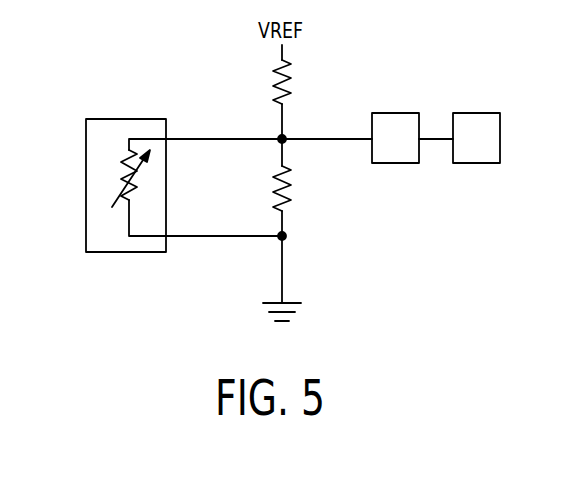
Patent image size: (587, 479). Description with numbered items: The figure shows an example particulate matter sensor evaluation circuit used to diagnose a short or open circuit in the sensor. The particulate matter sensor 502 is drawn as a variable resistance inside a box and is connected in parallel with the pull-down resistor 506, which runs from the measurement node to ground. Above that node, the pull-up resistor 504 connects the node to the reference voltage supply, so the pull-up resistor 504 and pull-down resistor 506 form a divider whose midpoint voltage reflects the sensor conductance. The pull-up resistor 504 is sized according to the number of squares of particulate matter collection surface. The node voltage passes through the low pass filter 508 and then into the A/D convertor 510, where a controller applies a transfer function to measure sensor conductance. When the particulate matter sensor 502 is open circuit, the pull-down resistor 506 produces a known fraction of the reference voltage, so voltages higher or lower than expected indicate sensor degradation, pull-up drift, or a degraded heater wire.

The particulate matter sensor 502 is at (97, 237).
The pull-up resistor 504 is at (292, 78).
The pull-down resistor 506 is at (290, 185).
The low pass filter 508 is at (403, 113).
The A/D convertor 510 is at (483, 113).